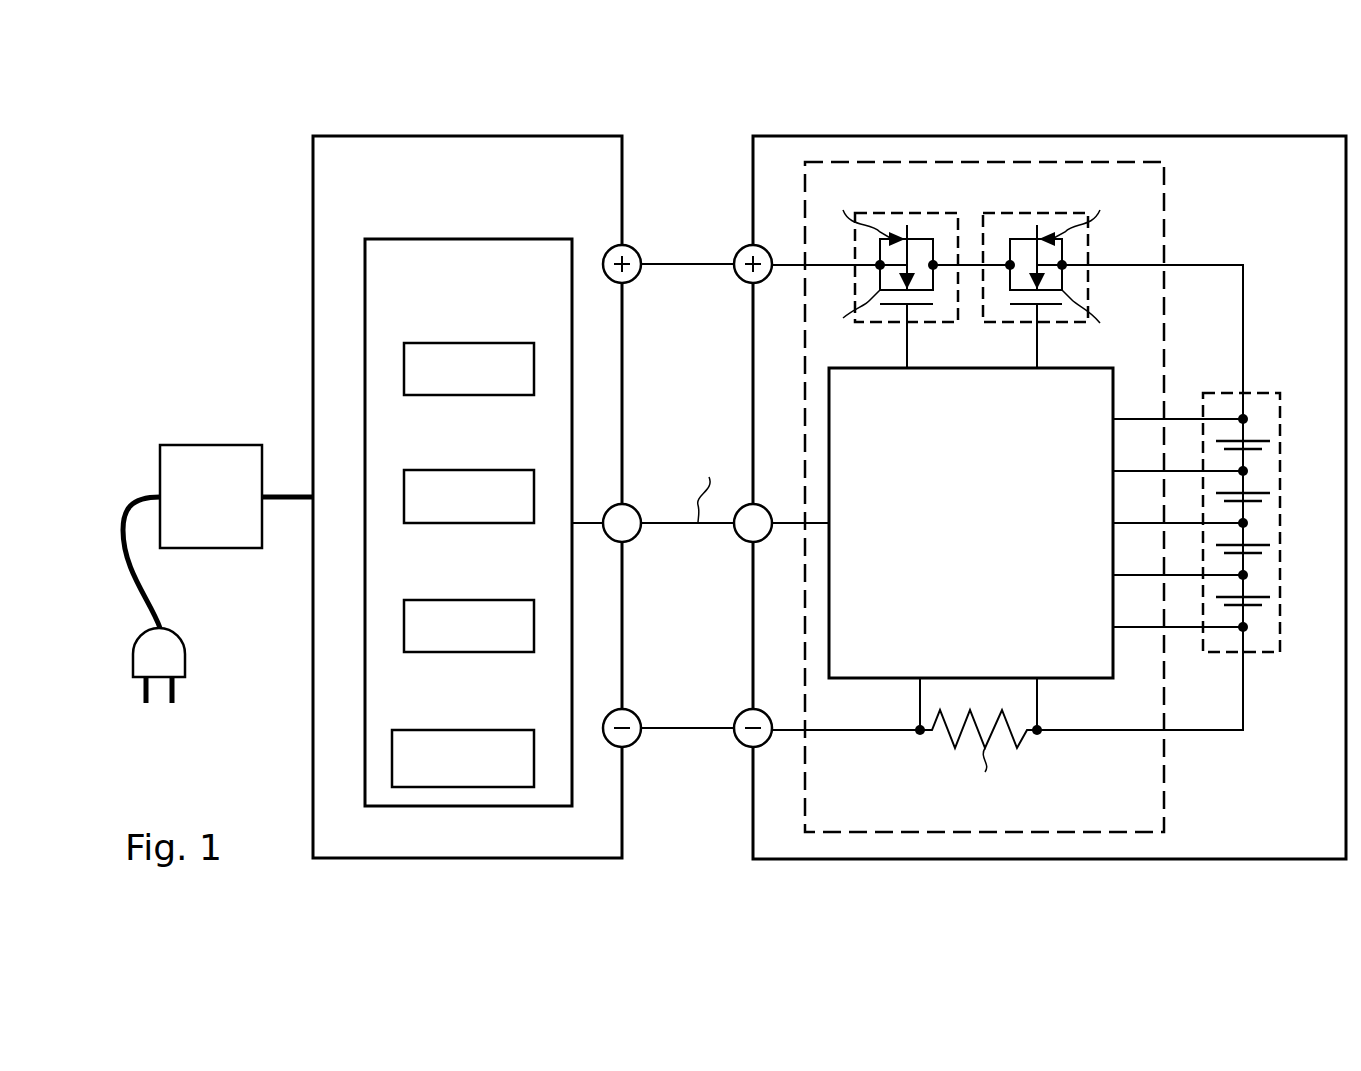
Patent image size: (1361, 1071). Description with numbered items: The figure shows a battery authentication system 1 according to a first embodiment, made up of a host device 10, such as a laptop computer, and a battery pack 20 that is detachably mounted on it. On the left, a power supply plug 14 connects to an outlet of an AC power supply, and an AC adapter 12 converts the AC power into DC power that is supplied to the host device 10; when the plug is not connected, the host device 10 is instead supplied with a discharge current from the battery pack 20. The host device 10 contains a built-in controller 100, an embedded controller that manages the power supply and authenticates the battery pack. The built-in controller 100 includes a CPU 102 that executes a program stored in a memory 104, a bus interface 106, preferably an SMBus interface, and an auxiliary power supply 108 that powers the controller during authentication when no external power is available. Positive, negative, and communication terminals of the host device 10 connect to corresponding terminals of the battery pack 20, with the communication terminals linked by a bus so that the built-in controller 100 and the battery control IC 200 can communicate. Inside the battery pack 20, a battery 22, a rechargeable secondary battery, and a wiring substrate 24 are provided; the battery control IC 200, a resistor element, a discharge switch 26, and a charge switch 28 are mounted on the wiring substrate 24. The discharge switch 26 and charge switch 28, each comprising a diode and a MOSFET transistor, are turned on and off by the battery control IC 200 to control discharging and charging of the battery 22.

The battery authentication system 1 is at (226, 112).
The host device 10 is at (343, 136).
The AC adapter 12 is at (212, 445).
The power supply plug 14 is at (172, 632).
The built-in controller 100 is at (470, 239).
The CPU 102 is at (520, 343).
The memory 104 is at (520, 470).
The bus interface 106 is at (520, 600).
The auxiliary power supply 108 is at (520, 730).
The battery pack 20 is at (1270, 136).
The battery 22 is at (1272, 393).
The wiring substrate 24 is at (1164, 778).
The discharge switch 26 is at (906, 213).
The charge switch 28 is at (1036, 213).
The battery control IC 200 is at (955, 368).